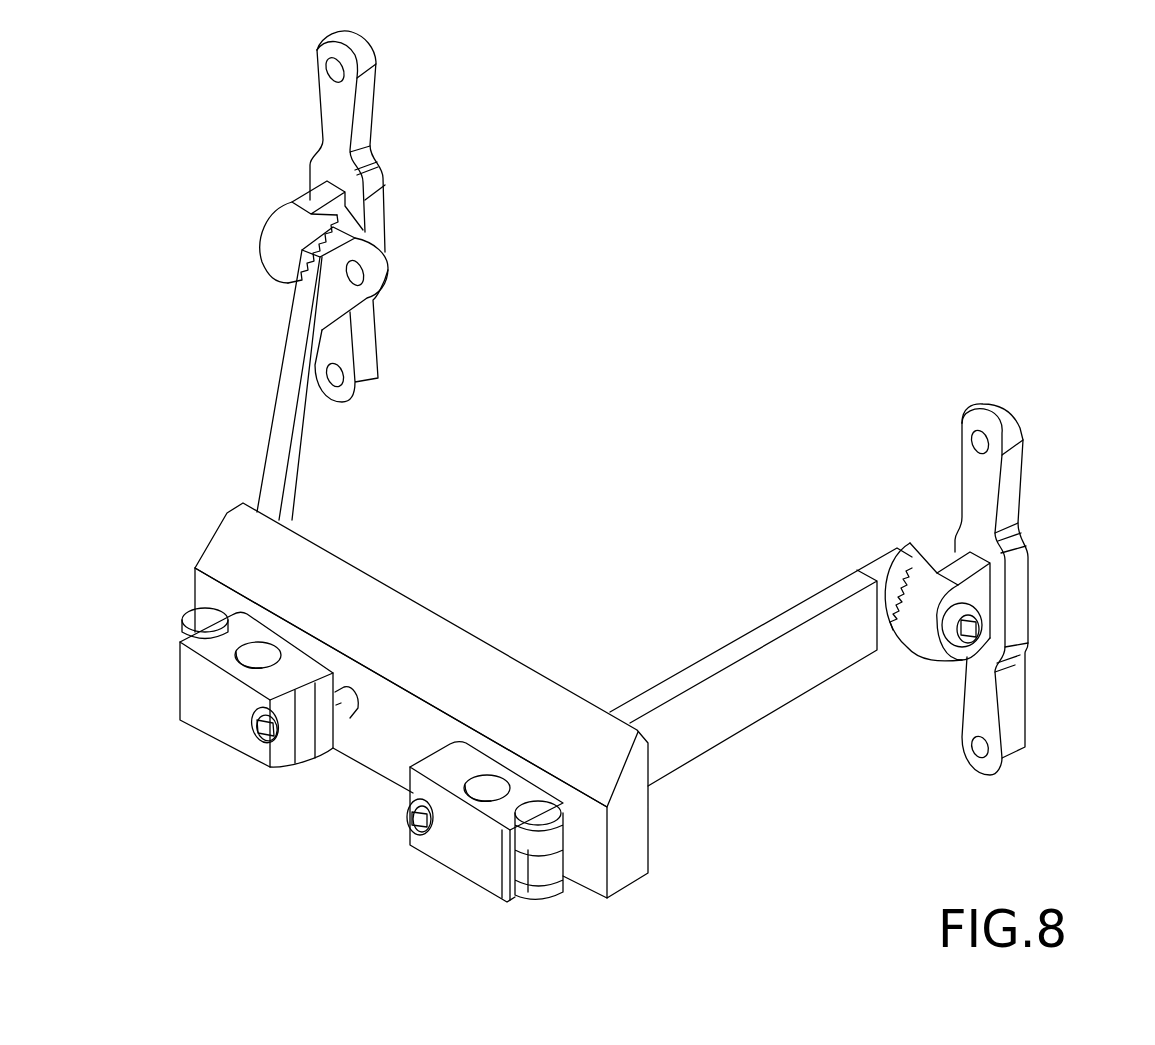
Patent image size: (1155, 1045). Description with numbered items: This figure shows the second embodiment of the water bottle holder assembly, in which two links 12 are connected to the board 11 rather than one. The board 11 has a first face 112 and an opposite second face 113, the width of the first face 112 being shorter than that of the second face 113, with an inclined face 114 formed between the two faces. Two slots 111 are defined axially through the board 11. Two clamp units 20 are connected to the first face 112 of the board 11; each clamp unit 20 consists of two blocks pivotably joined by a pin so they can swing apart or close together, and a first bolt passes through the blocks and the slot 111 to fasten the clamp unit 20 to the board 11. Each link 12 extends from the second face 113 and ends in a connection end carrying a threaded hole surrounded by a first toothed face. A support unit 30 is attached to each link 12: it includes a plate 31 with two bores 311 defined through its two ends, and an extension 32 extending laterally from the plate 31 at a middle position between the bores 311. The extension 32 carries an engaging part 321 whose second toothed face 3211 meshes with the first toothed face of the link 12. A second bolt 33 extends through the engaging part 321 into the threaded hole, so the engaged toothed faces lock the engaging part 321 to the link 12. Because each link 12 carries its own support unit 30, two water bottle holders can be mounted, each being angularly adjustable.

The board 11 is at (434, 676).
The slot 111 is at (350, 718).
The first face 112 is at (393, 767).
The second face 113 is at (648, 827).
The inclined face 114 is at (325, 565).
The link 12 is at (270, 422).
The clamp unit 20 is at (218, 753).
The support unit 30 is at (272, 167).
The plate 31 is at (981, 579).
The bore 311 is at (973, 441).
The extension 32 is at (963, 563).
The engaging part 321 is at (864, 645).
The second toothed face 3211 is at (885, 602).
The second bolt 33 is at (960, 650).